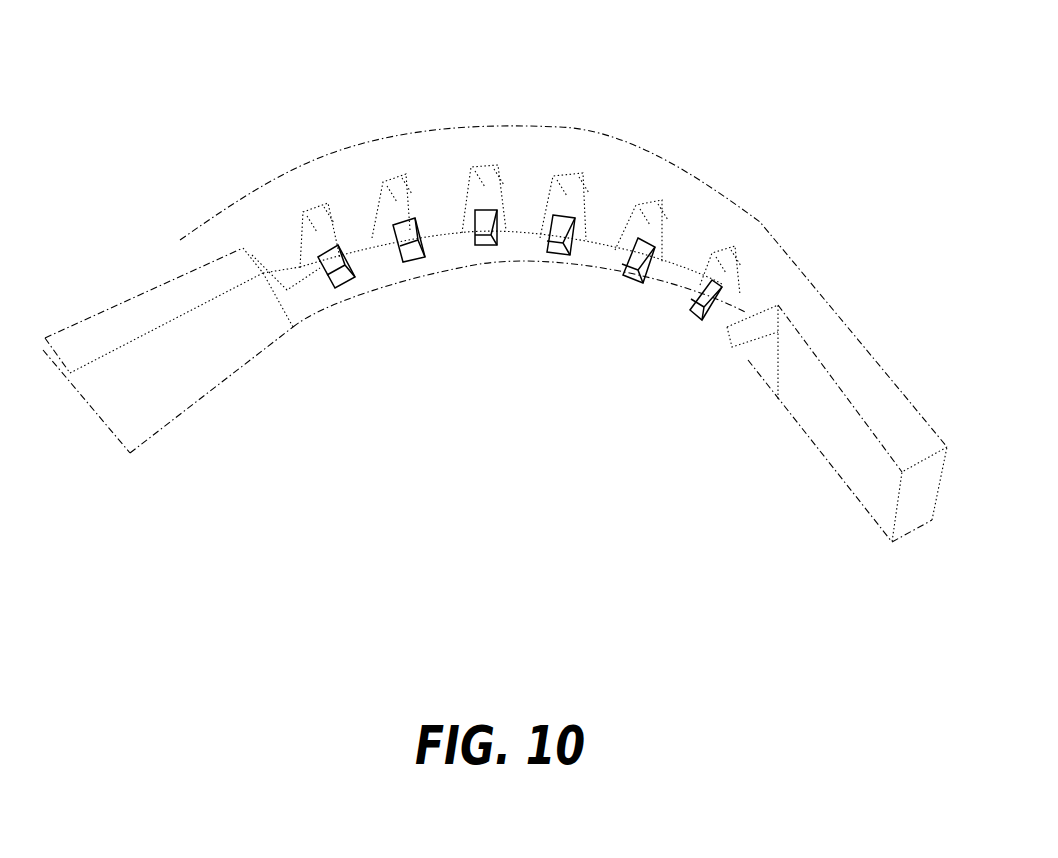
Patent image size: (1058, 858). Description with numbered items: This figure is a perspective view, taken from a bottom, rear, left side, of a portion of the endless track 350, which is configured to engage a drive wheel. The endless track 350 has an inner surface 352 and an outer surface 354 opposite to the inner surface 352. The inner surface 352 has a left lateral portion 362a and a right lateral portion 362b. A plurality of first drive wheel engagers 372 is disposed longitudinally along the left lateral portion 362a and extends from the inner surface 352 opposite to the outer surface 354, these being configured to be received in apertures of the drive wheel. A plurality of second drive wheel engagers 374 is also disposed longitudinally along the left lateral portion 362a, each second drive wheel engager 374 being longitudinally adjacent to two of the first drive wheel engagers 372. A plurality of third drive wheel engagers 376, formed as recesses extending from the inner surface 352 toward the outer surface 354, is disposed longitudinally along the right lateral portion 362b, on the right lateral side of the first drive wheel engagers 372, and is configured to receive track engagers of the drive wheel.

The endless track 350 is at (251, 552).
The inner surface 352 is at (850, 457).
The outer surface 354 is at (843, 245).
The left lateral portion 362a is at (232, 273).
The right lateral portion 362b is at (300, 314).
The first drive wheel engagers 372 is at (280, 247).
The second drive wheel engagers 374 is at (313, 207).
The third drive wheel engagers 376 is at (347, 297).